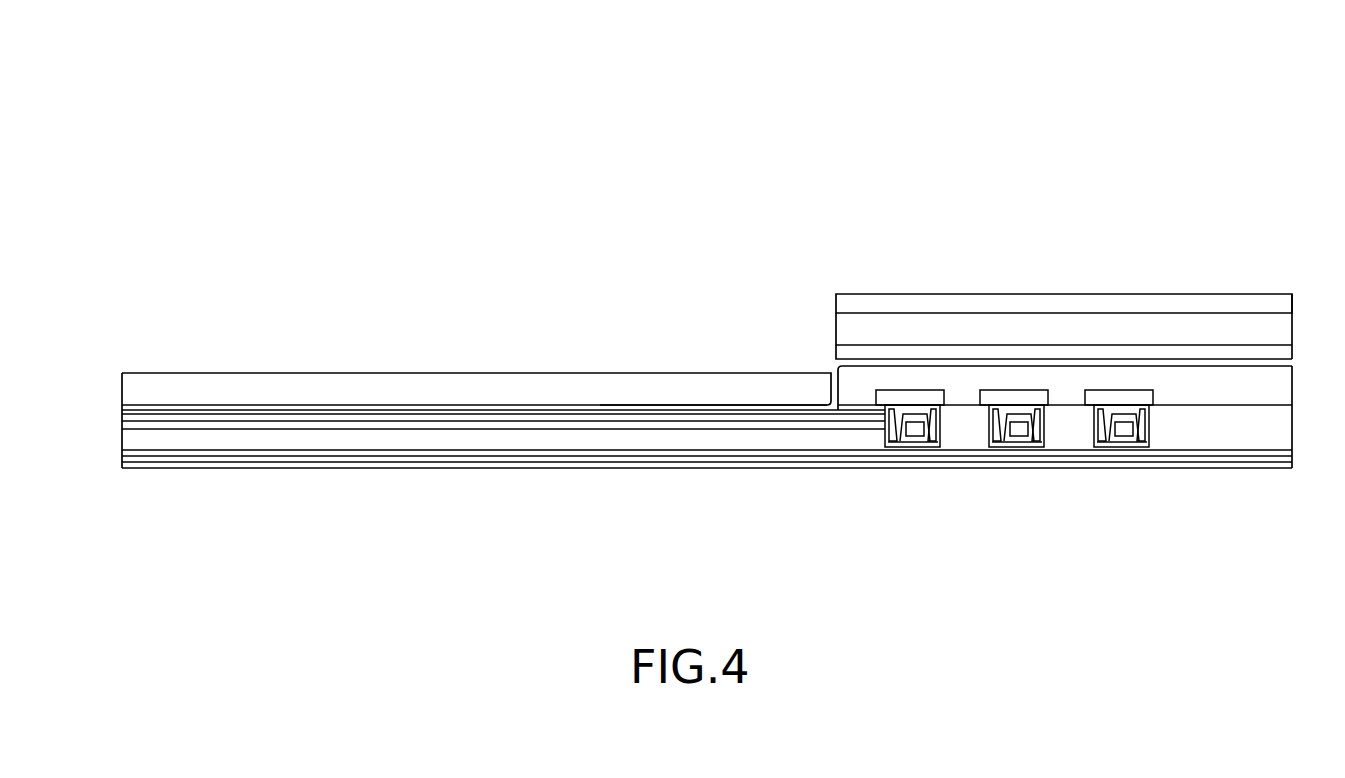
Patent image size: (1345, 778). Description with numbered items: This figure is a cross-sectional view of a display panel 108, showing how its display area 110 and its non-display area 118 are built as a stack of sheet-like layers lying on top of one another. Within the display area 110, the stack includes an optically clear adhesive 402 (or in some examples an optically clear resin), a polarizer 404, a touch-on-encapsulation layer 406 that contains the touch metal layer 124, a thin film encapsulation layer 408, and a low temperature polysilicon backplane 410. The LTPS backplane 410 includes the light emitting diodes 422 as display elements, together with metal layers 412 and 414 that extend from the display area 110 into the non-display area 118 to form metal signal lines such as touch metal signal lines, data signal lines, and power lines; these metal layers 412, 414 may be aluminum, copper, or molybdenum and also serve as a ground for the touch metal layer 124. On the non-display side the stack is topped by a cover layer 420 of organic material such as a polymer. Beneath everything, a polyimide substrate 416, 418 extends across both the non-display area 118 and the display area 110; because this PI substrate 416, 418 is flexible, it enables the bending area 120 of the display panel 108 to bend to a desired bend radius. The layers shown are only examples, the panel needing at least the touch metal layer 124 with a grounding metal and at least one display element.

The display panel 108 is at (735, 100).
The display area 110 is at (1293, 200).
The non-display area 118 is at (830, 523).
The bending area 120 is at (122, 482).
The touch metal layer 124 is at (717, 403).
The optically clear adhesive 402 is at (1135, 305).
The polarizer 404 is at (1293, 323).
The touch-on-encapsulation layer 406 is at (833, 357).
The thin film encapsulation layer 408 is at (1283, 390).
The LTPS backplane 410 is at (1278, 440).
The metal layer 412 is at (121, 410).
The metal layer 414 is at (130, 421).
The polyimide substrate 416 is at (1173, 452).
The polyimide substrate 418 is at (1205, 462).
The cover layer 420 is at (296, 385).
The light emitting diodes 422 is at (927, 443).